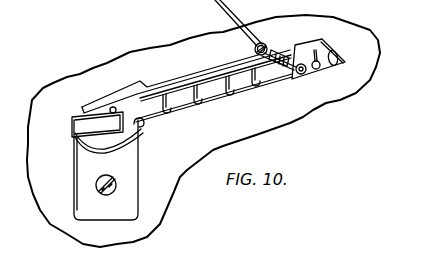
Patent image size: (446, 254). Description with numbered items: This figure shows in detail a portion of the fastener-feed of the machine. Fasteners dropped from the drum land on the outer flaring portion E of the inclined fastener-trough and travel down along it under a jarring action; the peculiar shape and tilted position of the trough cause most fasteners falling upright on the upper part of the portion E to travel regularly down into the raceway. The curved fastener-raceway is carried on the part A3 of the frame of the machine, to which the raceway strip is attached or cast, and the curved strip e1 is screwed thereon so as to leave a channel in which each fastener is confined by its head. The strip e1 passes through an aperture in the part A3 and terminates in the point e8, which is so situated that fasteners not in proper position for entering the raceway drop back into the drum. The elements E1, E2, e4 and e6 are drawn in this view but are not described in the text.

The part of the frame A3 is at (149, 170).
The curved strip e1 is at (97, 122).
The rail E1 is at (187, 86).
The hooks e6 is at (211, 90).
The point e8 is at (142, 122).
The rod e4 is at (255, 35).
The outer flaring portion of the inclined fastener-trough E is at (290, 78).
The pin E2 is at (314, 59).